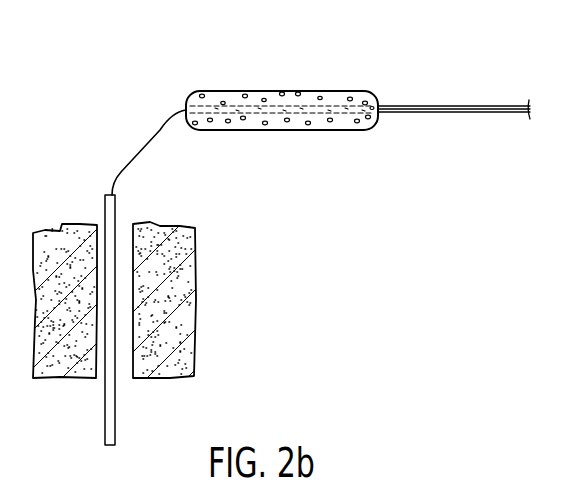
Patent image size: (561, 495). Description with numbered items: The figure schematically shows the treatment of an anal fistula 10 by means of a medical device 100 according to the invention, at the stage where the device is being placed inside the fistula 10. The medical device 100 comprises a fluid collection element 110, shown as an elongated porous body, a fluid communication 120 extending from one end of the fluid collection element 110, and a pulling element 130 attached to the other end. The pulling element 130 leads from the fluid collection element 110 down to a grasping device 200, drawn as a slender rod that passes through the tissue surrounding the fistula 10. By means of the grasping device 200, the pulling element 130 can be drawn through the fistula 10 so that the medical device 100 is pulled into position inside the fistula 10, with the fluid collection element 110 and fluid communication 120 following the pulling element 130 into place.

The medical device 100 is at (151, 87).
The fluid collection element 110 is at (278, 91).
The fluid communication 120 is at (450, 105).
The pulling element 130 is at (150, 146).
The grasping device 200 is at (117, 416).
The anal fistula 10 is at (127, 283).